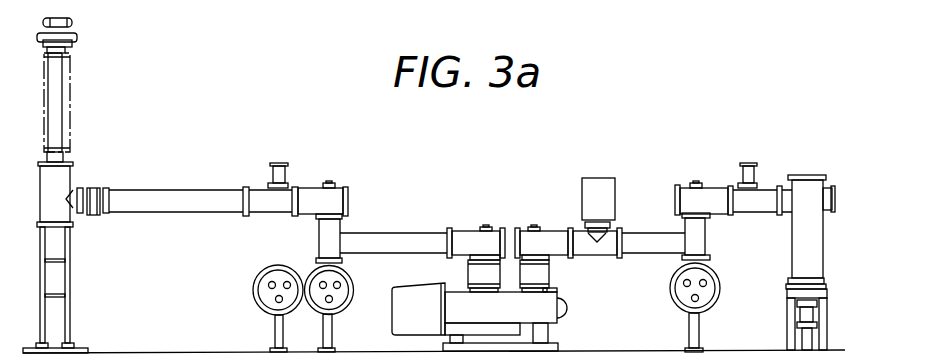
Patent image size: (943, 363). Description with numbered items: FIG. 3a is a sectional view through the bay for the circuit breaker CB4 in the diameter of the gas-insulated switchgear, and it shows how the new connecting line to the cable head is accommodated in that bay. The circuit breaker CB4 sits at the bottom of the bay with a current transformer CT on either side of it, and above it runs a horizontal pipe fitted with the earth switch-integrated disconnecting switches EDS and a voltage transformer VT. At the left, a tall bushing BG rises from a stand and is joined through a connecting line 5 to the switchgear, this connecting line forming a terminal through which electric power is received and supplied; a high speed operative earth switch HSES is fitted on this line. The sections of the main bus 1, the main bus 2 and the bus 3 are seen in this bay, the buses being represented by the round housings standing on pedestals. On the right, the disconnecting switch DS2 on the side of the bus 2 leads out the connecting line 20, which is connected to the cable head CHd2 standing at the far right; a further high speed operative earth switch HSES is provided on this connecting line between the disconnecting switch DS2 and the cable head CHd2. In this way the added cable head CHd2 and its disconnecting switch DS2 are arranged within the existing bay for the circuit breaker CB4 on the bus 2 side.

The bushing BG is at (66, 185).
The connecting line 5 is at (148, 191).
The high speed operative earth switch HSES is at (513, 159).
The earth switch-integrated disconnecting switch EDS is at (441, 206).
The current transformer CT is at (513, 273).
The voltage transformer VT is at (597, 201).
The disconnecting switch DS2 is at (704, 182).
The connecting line 20 is at (767, 188).
The cable head CHd2 is at (781, 285).
The circuit breaker CB4 is at (479, 317).
The main bus 1 is at (257, 311).
The main bus 2 is at (719, 300).
The bus 3 is at (346, 310).